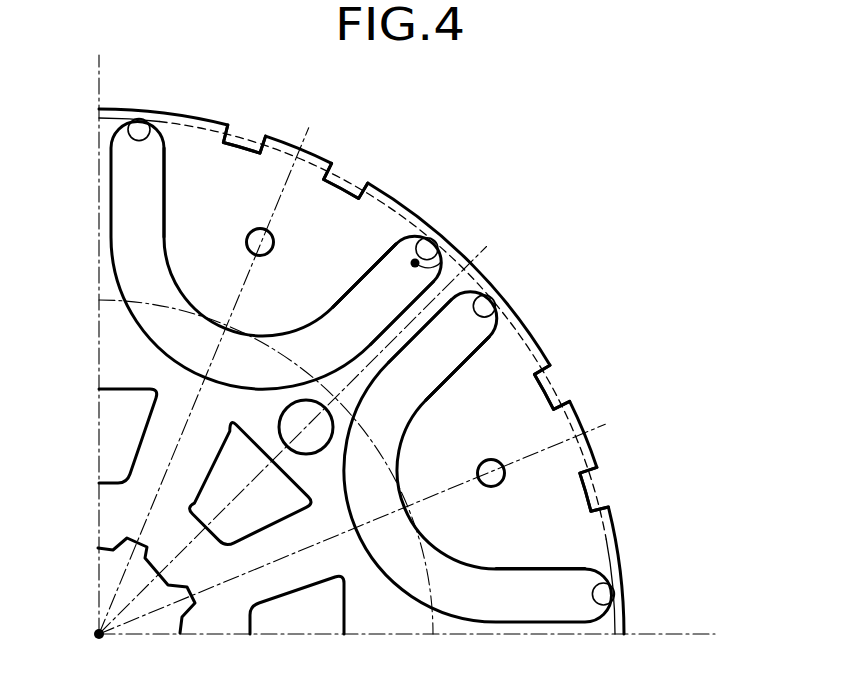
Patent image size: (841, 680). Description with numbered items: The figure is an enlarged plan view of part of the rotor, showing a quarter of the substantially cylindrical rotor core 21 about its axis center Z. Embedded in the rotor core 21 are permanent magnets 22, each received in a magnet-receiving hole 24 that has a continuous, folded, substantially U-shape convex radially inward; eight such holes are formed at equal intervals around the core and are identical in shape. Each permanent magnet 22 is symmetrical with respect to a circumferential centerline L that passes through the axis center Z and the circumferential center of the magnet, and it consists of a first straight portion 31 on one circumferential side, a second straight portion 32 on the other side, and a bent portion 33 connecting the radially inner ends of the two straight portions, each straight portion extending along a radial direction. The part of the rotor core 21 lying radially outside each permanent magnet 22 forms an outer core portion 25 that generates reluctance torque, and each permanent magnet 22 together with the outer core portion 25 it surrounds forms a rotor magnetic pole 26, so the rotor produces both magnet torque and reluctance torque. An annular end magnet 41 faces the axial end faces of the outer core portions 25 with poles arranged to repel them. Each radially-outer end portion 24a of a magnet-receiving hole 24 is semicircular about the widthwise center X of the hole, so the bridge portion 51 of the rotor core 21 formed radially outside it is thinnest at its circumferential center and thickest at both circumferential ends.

The rotor core 21 is at (485, 268).
The permanent magnet 22 is at (373, 257).
The magnet-receiving hole 24 is at (334, 326).
The radially-outer end portion 24a is at (122, 117).
The outer core portion 25 is at (237, 167).
The rotor magnetic pole 26 is at (335, 152).
The first straight portion 31 is at (152, 183).
The second straight portion 32 is at (357, 283).
The bent portion 33 is at (173, 335).
The annular end magnet 41 is at (535, 343).
The bridge portion 51 is at (153, 115).
The circumferential centerline L is at (300, 123).
The widthwise center X is at (450, 250).
The axis center Z is at (94, 632).